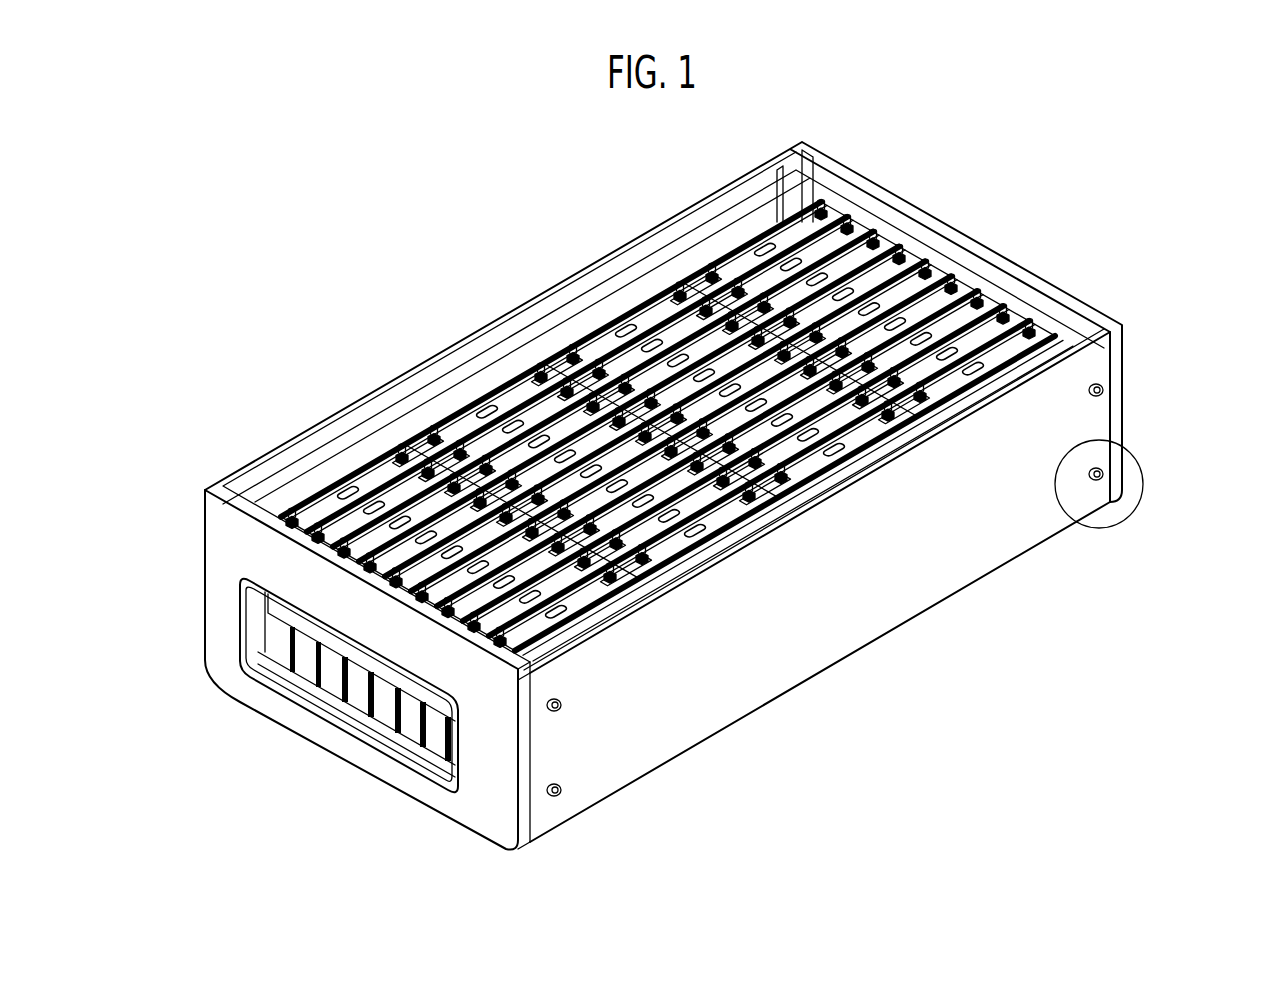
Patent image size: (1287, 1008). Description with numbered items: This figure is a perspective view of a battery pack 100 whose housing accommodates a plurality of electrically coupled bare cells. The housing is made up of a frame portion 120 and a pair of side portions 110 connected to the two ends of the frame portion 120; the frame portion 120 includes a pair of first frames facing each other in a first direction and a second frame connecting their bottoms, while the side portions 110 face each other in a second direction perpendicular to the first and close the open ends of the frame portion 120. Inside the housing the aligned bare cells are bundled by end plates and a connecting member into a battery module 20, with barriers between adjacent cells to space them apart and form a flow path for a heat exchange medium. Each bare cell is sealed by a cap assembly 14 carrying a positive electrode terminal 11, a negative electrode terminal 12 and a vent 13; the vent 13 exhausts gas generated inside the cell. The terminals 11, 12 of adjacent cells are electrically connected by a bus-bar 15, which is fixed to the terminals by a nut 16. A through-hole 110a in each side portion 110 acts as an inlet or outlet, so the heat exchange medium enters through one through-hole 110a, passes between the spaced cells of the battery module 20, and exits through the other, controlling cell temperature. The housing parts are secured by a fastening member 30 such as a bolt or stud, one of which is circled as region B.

The battery pack 100 is at (705, 505).
The side portion 110 is at (963, 237).
The through-hole 110a is at (328, 683).
The frame portion 120 is at (848, 604).
The battery module 20 is at (677, 392).
The positive electrode terminal 11 is at (825, 195).
The negative electrode terminal 12 is at (710, 265).
The vent 13 is at (767, 247).
The cap assembly 14 is at (742, 260).
The bus-bar 15 is at (1027, 320).
The nut 16 is at (1010, 307).
The fastening member 30 is at (1104, 390).
The region B is at (1105, 527).